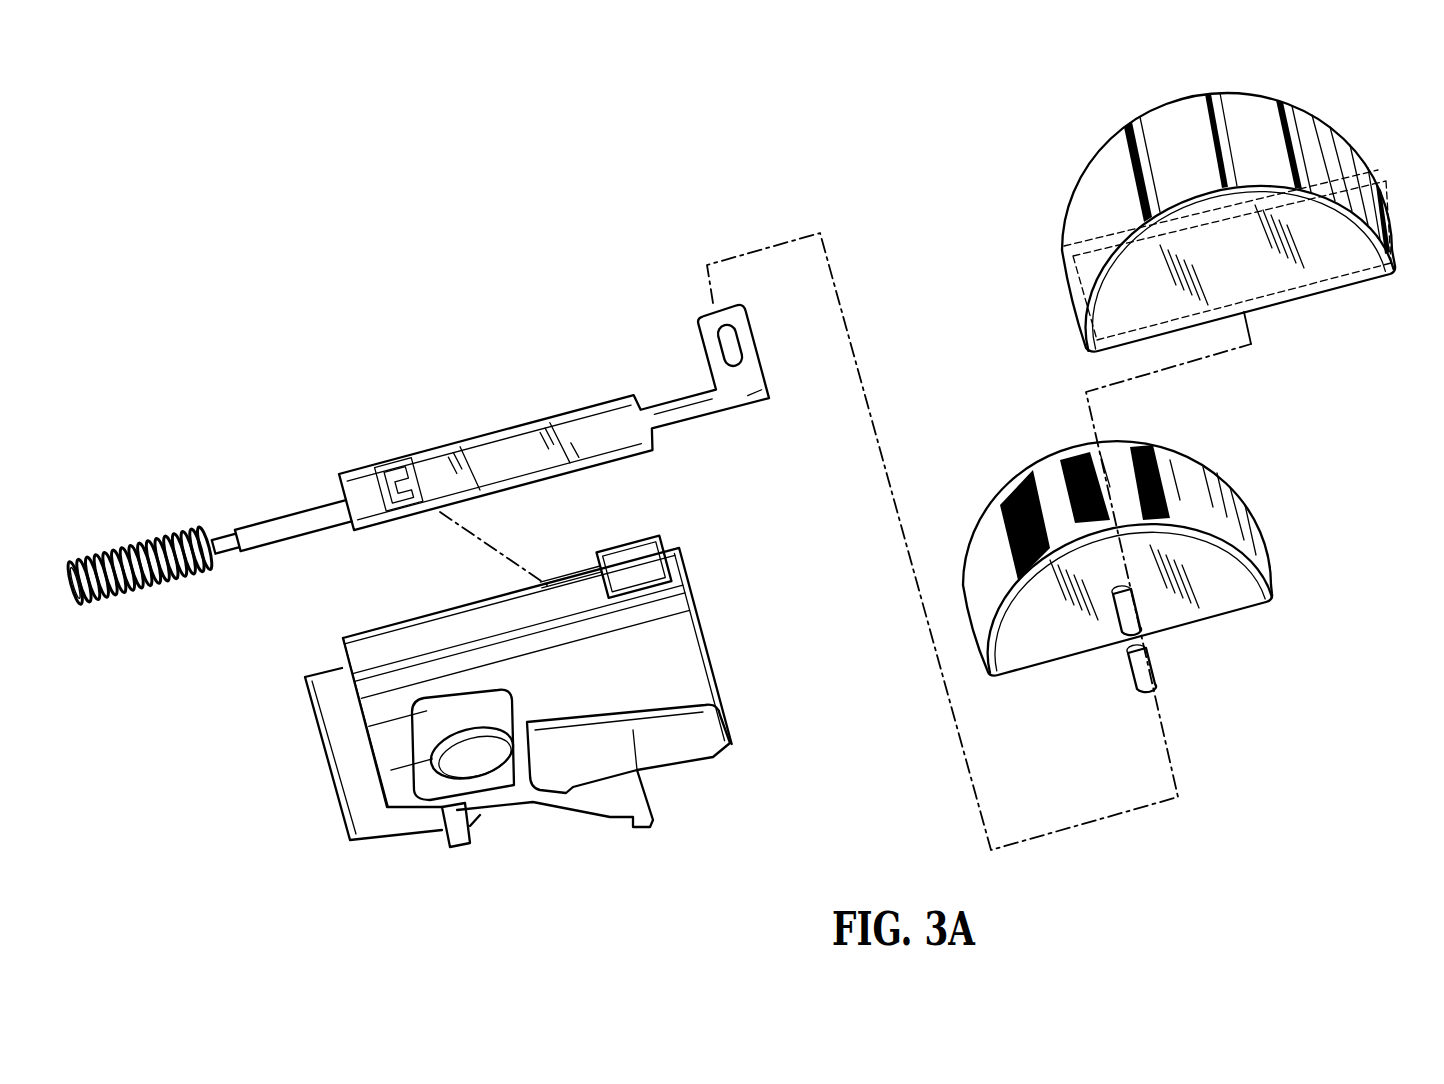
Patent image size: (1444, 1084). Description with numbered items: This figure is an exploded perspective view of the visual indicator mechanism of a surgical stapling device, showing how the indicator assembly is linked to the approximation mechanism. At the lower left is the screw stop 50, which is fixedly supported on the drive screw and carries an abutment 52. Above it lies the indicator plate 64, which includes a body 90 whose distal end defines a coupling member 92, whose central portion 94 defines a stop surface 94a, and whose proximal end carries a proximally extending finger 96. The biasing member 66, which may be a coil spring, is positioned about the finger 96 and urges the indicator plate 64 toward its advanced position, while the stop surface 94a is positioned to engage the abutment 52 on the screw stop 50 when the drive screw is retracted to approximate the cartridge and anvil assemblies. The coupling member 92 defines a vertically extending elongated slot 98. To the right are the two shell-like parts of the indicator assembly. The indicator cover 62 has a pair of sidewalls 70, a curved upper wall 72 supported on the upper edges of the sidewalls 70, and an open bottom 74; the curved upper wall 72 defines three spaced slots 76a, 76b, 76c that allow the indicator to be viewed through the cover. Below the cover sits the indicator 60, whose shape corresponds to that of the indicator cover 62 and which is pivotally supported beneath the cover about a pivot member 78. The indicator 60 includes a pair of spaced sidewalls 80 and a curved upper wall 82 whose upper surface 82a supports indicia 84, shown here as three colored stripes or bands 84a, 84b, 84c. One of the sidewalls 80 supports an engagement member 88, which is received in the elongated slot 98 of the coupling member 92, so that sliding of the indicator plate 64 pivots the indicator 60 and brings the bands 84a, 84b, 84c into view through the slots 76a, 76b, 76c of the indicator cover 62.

The screw stop 50 is at (518, 693).
The abutment 52 is at (637, 542).
The indicator 60 is at (1141, 559).
The indicator cover 62 is at (718, 186).
The indicator plate 64 is at (400, 302).
The biasing member 66 is at (140, 566).
The sidewalls 70 is at (1342, 262).
The curved upper wall 72 is at (1347, 180).
The open bottom 74 is at (1267, 268).
The slot 76a is at (1287, 112).
The slot 76b is at (1214, 108).
The slot 76c is at (1134, 140).
The pivot member 78 is at (1126, 598).
The sidewalls 80 is at (1047, 458).
The curved upper wall 82 is at (1220, 505).
The upper surface 82a is at (1171, 478).
The indicia 84 is at (1080, 471).
The colored stripe or band 84a is at (1138, 442).
The colored stripe or band 84b is at (1083, 440).
The colored stripe or band 84c is at (1012, 488).
The engagement member 88 is at (1138, 667).
The body 90 is at (588, 402).
The coupling member 92 is at (746, 336).
The central portion 94 is at (487, 478).
The stop surface 94a is at (399, 484).
The finger 96 is at (281, 528).
The elongated slot 98 is at (718, 336).